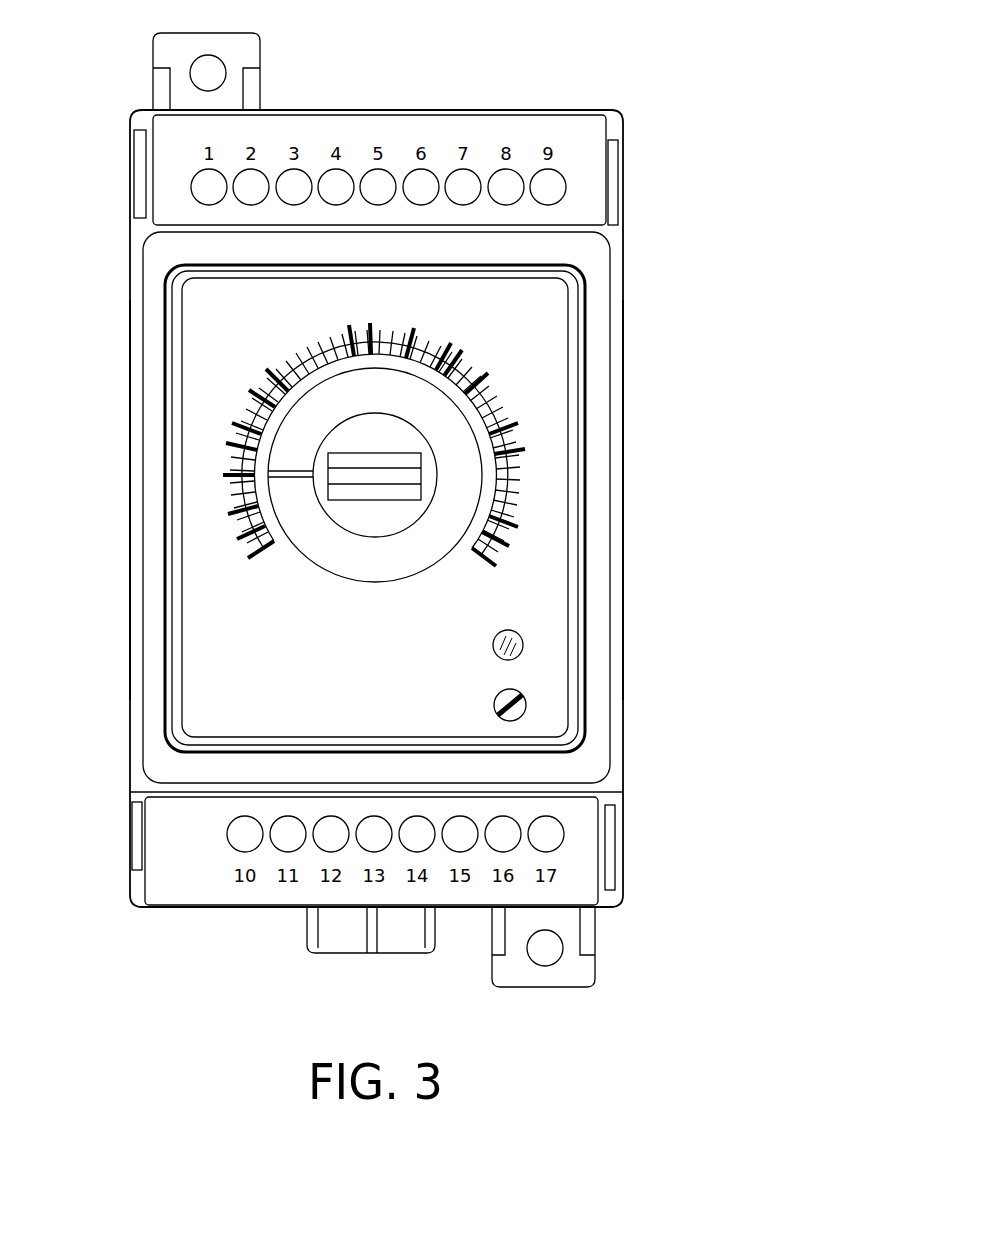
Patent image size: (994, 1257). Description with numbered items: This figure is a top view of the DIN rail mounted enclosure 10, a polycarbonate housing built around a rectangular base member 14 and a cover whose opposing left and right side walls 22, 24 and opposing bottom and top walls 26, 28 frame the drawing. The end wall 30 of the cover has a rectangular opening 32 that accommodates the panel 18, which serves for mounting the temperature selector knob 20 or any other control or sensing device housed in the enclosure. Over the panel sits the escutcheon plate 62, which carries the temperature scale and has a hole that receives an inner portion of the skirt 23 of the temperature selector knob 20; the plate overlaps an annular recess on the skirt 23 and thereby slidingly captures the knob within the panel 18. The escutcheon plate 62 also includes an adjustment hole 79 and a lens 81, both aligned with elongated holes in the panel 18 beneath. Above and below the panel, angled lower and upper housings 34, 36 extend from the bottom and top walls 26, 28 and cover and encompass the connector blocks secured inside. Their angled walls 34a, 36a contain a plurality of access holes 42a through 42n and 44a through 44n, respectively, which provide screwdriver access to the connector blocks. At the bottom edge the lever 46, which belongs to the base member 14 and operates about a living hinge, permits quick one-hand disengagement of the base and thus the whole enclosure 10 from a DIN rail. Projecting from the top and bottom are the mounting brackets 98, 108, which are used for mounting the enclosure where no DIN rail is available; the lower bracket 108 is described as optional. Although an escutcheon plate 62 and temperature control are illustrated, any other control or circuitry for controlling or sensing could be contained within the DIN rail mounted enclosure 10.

The DIN rail mounted enclosure 10 is at (773, 98).
The rectangular base member 14 is at (639, 873).
The panel 18 is at (553, 655).
The temperature selector knob 20 is at (407, 443).
The left side wall 22 is at (618, 520).
The skirt 23 is at (375, 492).
The right side wall 24 is at (130, 535).
The bottom wall 26 is at (165, 790).
The top wall 28 is at (414, 478).
The end wall 30 is at (150, 583).
The rectangular opening 32 is at (165, 625).
The angled lower housing 34 is at (175, 862).
The angled wall 34a is at (170, 887).
The angled upper housing 36 is at (158, 190).
The angled wall 36a is at (158, 200).
The access hole 42a is at (240, 836).
The access hole 42n is at (610, 847).
The access hole 44a is at (203, 184).
The access hole 44n is at (587, 140).
The lever 46 is at (365, 949).
The escutcheon plate 62 is at (550, 613).
The adjustment hole 79 is at (481, 693).
The lens 81 is at (475, 634).
The mounting bracket 98 is at (226, 57).
The mounting bracket 108 is at (567, 967).